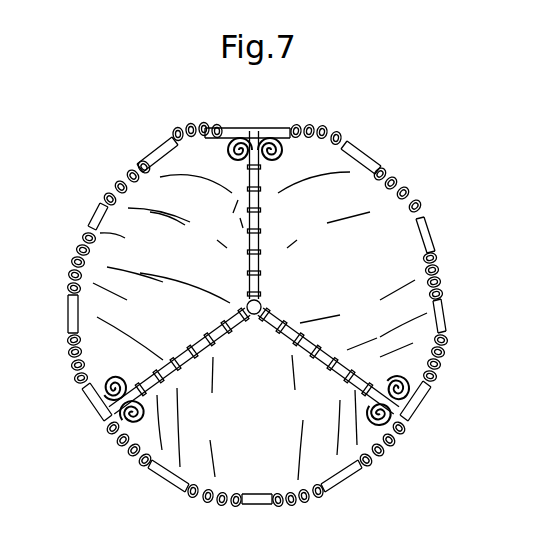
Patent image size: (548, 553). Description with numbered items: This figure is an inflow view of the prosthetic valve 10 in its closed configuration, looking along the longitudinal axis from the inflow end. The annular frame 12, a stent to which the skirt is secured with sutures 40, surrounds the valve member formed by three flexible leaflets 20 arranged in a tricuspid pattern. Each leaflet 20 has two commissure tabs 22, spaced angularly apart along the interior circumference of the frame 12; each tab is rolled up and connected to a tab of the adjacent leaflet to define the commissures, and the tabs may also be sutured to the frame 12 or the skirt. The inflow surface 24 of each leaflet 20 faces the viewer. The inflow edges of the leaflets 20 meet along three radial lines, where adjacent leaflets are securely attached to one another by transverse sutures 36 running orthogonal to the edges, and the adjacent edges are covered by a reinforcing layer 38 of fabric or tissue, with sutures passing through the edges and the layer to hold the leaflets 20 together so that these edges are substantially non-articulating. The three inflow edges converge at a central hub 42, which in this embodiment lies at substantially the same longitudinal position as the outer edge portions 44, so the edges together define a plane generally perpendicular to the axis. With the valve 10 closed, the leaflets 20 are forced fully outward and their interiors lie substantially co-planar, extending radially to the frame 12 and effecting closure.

The prosthetic valve 10 is at (132, 140).
The frame 12 is at (392, 178).
The leaflets 20 is at (96, 226).
The commissure tabs 22 is at (236, 124).
The inflow surface 24 is at (192, 267).
The transverse sutures 36 is at (264, 210).
The reinforcing layer 38 is at (278, 312).
The sutures 40 is at (442, 286).
The hub 42 is at (76, 277).
The edge portions 44 is at (308, 126).